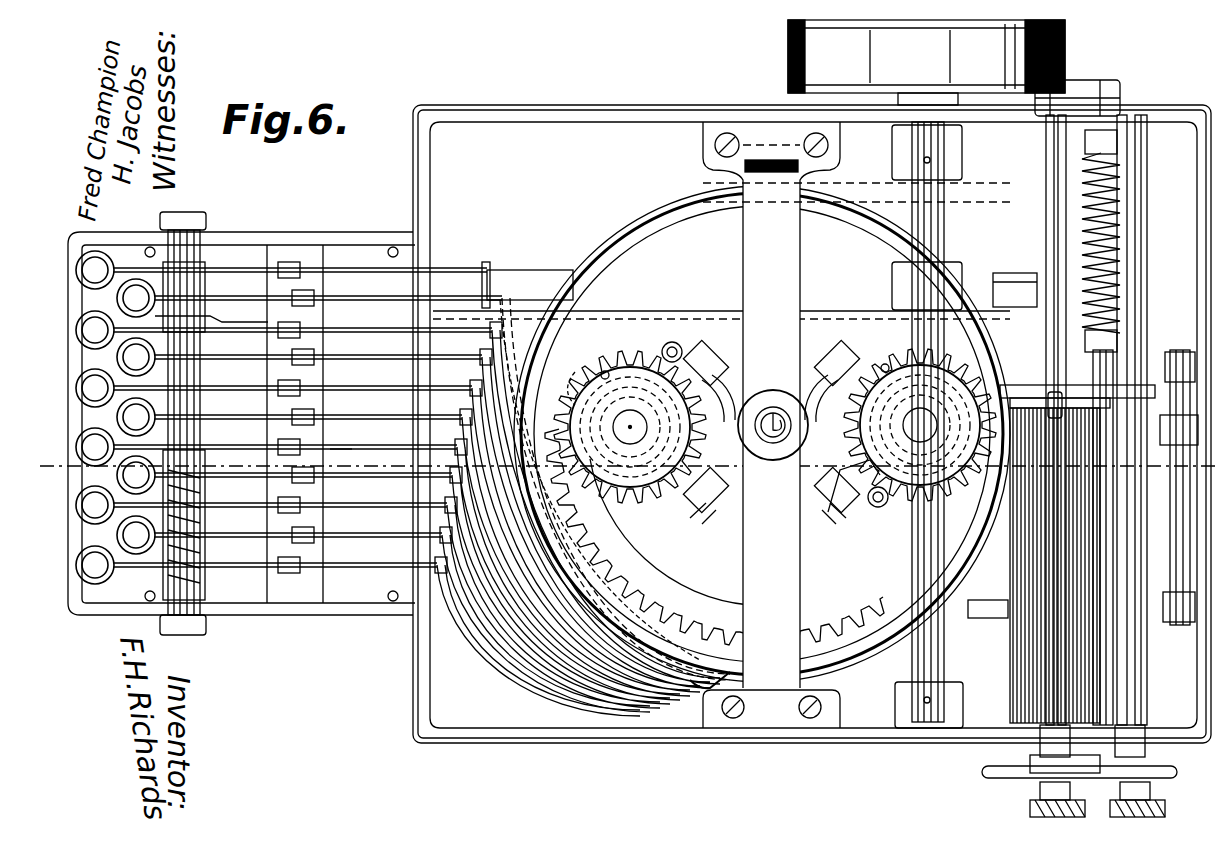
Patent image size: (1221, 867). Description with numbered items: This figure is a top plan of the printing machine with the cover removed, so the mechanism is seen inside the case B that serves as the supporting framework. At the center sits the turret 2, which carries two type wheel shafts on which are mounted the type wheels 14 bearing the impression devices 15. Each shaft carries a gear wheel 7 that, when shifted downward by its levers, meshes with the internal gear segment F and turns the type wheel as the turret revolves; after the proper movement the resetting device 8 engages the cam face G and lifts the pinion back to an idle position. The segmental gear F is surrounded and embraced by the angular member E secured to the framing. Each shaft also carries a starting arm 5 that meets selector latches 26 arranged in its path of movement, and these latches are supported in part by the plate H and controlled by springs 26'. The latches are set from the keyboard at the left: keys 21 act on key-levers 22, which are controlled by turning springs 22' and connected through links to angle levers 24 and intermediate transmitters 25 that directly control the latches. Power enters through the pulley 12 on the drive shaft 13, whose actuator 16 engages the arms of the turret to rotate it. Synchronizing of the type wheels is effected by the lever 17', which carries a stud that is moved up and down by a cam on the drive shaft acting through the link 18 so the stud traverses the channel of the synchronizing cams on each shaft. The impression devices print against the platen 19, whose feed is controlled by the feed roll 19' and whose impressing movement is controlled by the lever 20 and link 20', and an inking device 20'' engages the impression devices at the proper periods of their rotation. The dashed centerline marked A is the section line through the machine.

The turret 2 is at (845, 494).
The starting arm 5 is at (771, 432).
The gear wheel 7 is at (605, 372).
The resetting device 8 is at (566, 376).
The pulley 12 is at (790, 64).
The drive shaft 13 is at (947, 192).
The type wheel 14 is at (632, 372).
The impression device 15 is at (658, 483).
The actuator 16 is at (878, 506).
The lever 17' is at (358, 461).
The link 18 is at (855, 311).
The platen 19 is at (1065, 420).
The feed roll 19' is at (1134, 420).
The lever 20 is at (1079, 428).
The link 20' is at (1083, 487).
The inking device 20'' is at (774, 404).
The key 21 is at (88, 330).
The key-lever 22 is at (308, 403).
The turning spring 22' is at (211, 366).
The angle lever 24 is at (495, 275).
The intermediate transmitter 25 is at (498, 300).
The selector latch 26 is at (580, 547).
The spring 26' is at (710, 725).
The section line A is at (621, 468).
The case B is at (462, 728).
The angular member E is at (878, 212).
The internal gear segment F is at (690, 600).
The cam face G is at (669, 532).
The plate H is at (528, 672).